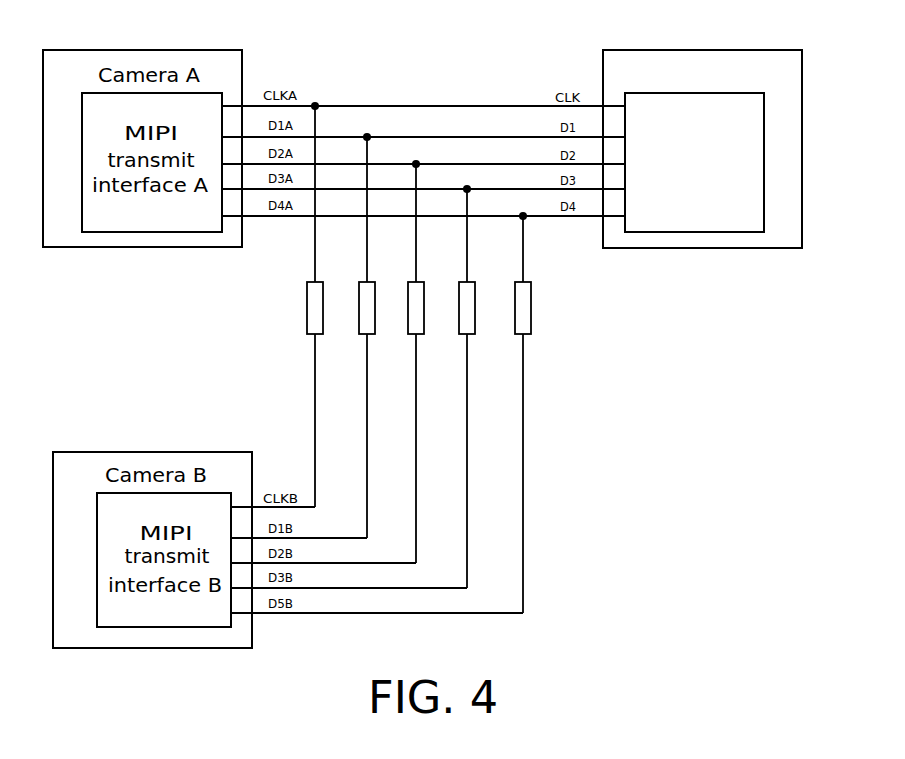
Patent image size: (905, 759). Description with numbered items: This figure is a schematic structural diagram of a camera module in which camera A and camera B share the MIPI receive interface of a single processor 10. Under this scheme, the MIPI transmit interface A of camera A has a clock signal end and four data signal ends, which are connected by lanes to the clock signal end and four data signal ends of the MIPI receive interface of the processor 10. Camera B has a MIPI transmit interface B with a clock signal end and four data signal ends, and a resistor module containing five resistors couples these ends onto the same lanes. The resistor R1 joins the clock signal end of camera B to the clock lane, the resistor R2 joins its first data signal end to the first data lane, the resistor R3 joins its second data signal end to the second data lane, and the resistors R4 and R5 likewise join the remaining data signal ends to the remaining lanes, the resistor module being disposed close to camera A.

The processor 10 is at (690, 249).
The resistor R1 is at (303, 306).
The resistor R2 is at (355, 337).
The resistor R3 is at (406, 363).
The resistor R4 is at (456, 388).
The resistor R5 is at (512, 414).